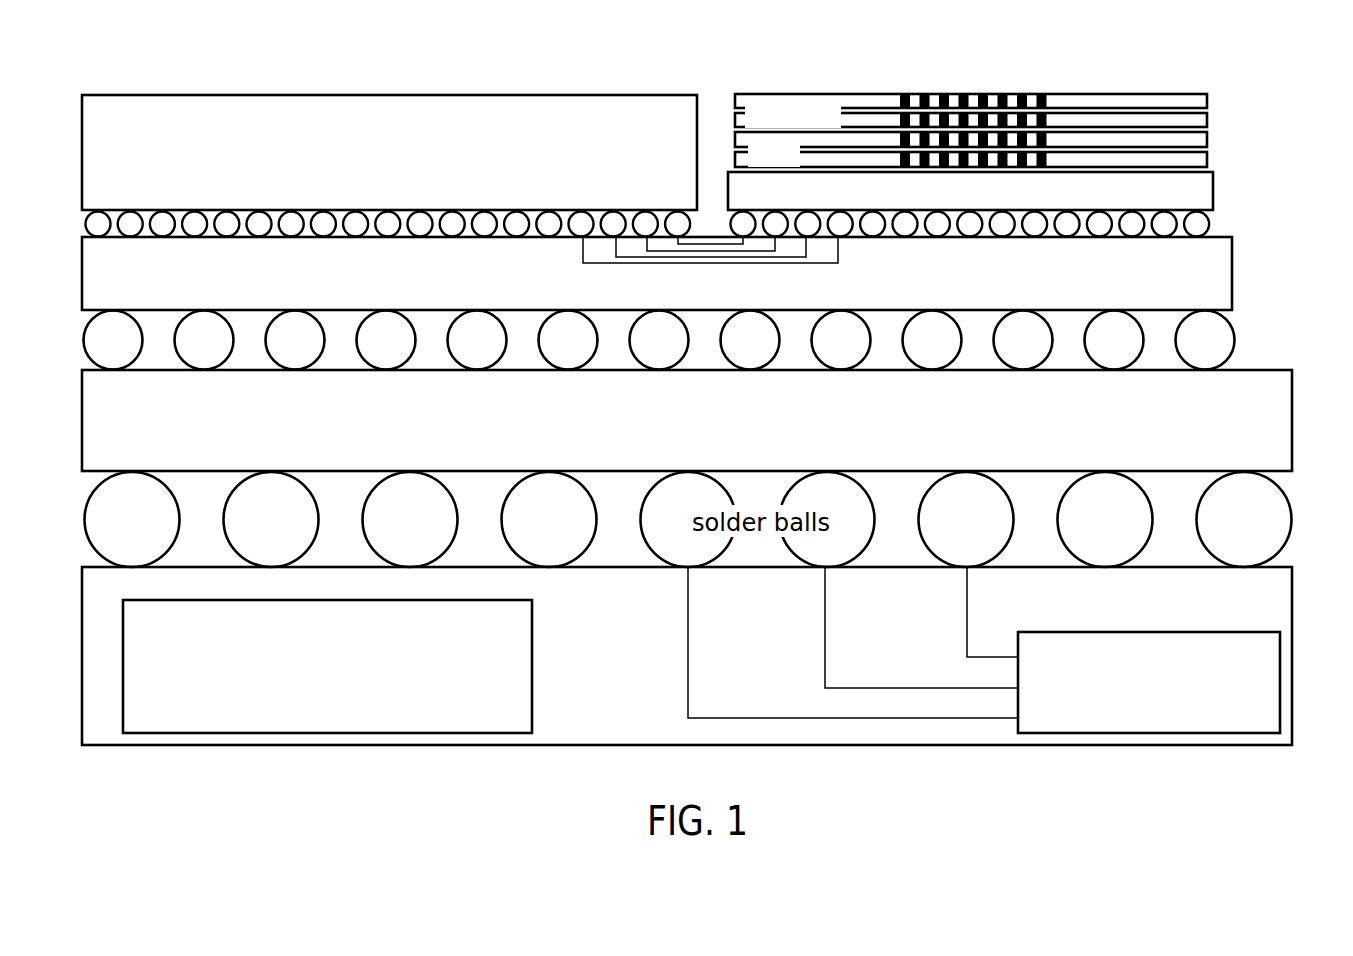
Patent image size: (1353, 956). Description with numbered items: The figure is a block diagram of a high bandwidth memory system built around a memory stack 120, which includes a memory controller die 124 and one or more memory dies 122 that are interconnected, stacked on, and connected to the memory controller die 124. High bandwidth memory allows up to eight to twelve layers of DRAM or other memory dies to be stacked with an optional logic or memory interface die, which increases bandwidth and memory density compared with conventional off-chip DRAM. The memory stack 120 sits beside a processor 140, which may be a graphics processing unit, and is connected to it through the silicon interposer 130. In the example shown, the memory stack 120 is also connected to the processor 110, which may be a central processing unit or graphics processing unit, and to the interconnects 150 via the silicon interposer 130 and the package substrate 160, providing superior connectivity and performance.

The processor 110 is at (347, 702).
The memory stack 120 is at (1004, 120).
The memory dies 122 is at (735, 157).
The memory controller die 124 is at (970, 191).
The silicon interposer 130 is at (1191, 289).
The processor 140 is at (599, 182).
The interconnects 150 is at (1254, 436).
The package substrate 160 is at (1174, 713).